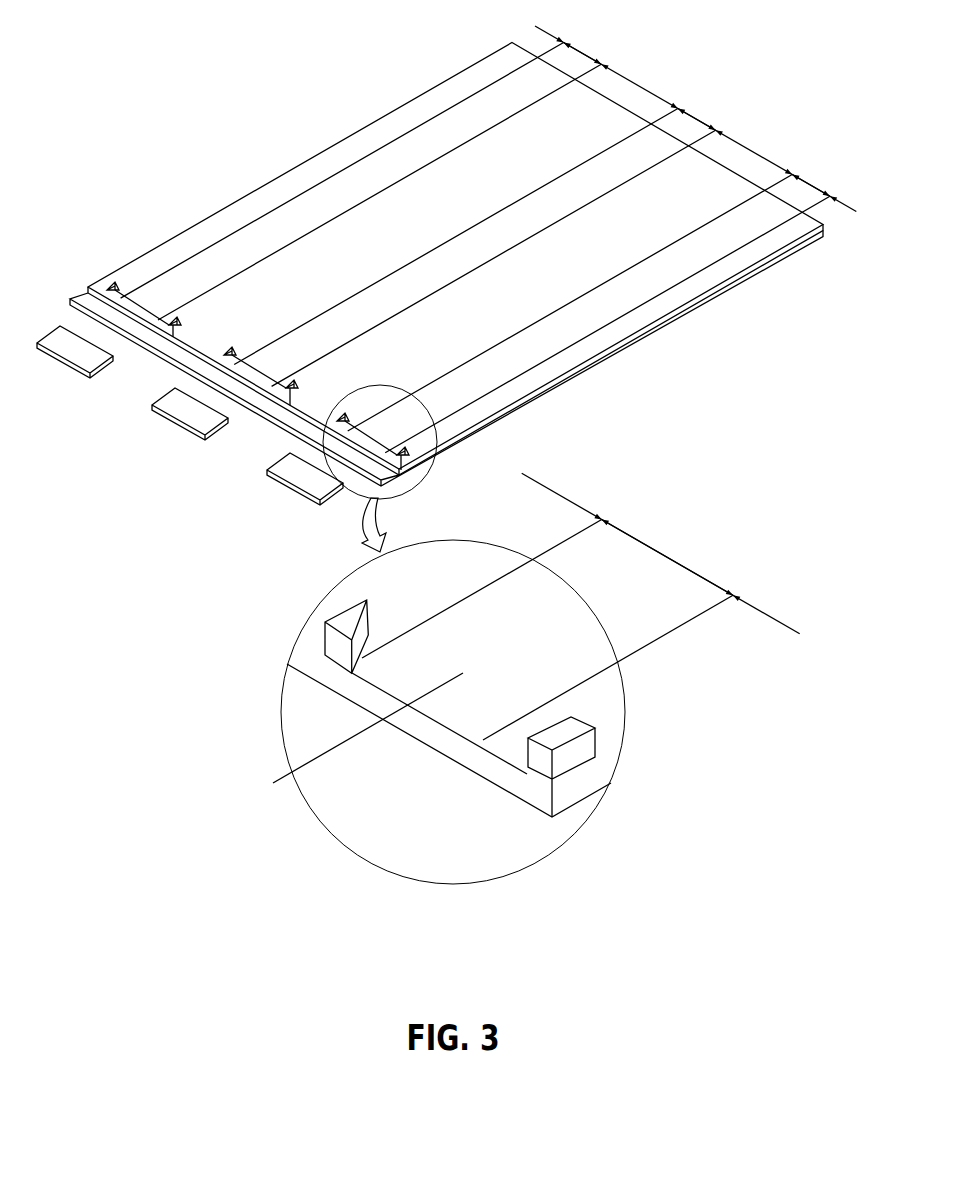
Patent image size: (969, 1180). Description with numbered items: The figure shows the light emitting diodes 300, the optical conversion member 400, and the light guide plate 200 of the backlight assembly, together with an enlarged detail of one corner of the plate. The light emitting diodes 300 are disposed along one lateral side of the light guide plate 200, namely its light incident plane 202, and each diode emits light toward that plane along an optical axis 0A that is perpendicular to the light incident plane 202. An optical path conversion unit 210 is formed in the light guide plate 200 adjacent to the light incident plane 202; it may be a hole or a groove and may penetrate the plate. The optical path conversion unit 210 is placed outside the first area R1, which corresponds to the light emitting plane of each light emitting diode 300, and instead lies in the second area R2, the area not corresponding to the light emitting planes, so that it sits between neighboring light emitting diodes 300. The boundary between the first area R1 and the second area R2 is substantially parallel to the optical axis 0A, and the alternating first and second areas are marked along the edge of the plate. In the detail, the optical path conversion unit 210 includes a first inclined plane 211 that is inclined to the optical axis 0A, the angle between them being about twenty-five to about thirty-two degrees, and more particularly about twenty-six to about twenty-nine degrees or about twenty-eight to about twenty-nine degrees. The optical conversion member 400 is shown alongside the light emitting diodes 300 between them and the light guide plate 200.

The light guide plate 200 is at (643, 333).
The light incident plane 202 is at (343, 690).
The optical path conversion unit 210 is at (117, 282).
The first inclined plane 211 is at (392, 692).
The light emitting diodes 300 is at (283, 488).
The optical conversion member 400 is at (276, 425).
The optical axis 0A is at (355, 734).
The first area R1 is at (700, 316).
The second area R2 is at (695, 323).